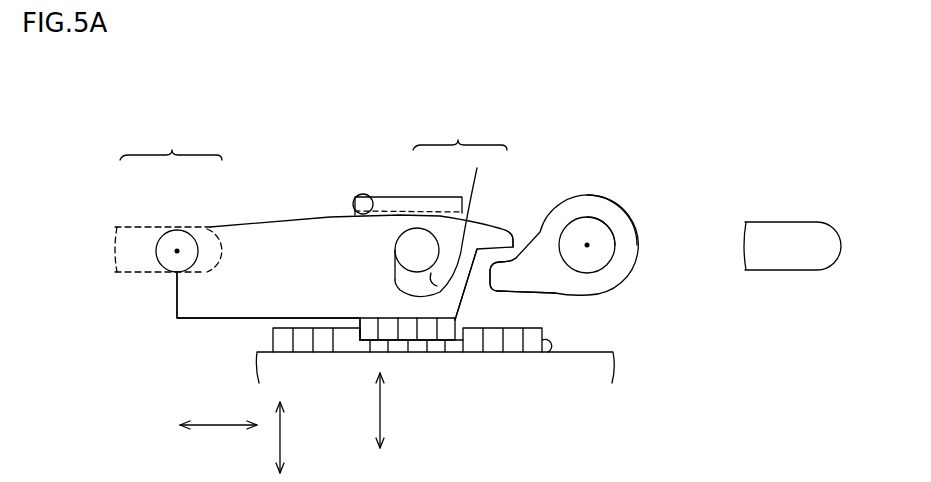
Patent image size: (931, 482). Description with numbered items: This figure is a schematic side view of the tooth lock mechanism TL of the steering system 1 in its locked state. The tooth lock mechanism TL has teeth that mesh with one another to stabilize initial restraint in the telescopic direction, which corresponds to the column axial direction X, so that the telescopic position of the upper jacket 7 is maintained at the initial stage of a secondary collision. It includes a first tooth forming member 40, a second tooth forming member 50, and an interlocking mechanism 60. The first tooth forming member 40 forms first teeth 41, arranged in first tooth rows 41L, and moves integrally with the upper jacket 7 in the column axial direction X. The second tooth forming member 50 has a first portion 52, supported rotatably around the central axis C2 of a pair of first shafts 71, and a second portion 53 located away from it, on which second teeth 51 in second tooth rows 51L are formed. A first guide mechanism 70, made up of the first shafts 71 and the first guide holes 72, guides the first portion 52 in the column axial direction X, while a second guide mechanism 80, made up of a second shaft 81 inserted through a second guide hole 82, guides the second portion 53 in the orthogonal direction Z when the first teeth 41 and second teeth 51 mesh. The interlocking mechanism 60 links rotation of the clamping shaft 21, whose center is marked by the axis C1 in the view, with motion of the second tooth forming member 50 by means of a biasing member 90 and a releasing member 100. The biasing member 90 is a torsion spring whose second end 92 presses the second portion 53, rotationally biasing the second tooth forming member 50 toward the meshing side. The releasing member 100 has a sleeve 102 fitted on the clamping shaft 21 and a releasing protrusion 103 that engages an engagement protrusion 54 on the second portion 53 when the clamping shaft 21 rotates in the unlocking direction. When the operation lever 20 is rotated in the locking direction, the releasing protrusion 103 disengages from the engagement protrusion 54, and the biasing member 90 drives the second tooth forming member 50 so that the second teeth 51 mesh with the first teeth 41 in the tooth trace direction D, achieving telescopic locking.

The steering system 1 is at (545, 145).
The upper jacket 7 is at (588, 351).
The operation lever 20 is at (780, 232).
The clamping shaft 21 is at (616, 246).
The first tooth forming member 40 is at (272, 342).
The first teeth 41 is at (495, 343).
The first tooth rows 41L is at (548, 352).
The second tooth forming member 50 is at (290, 218).
The second teeth 51 is at (426, 342).
The second tooth rows 51L is at (353, 334).
The first portion 52 is at (191, 308).
The second portion 53 is at (452, 297).
The engagement protrusion 54 is at (496, 230).
The interlocking mechanism 60 is at (620, 197).
The first guide mechanism 70 is at (171, 143).
The first shafts 71 is at (207, 227).
The first guide holes 72 is at (140, 237).
The second guide mechanism 80 is at (460, 130).
The second shaft 81 is at (418, 245).
The second guide hole 82 is at (500, 171).
The biasing member 90 is at (403, 193).
The second end 92 is at (363, 195).
The releasing member 100 is at (634, 217).
The sleeve 102 is at (626, 238).
The releasing protrusion 103 is at (503, 278).
The rotation center C1 is at (588, 247).
The central axis C2 is at (177, 251).
The tooth lock mechanism TL is at (573, 177).
The column axial direction X is at (218, 427).
The orthogonal direction Z is at (283, 435).
The tooth trace direction D is at (383, 408).